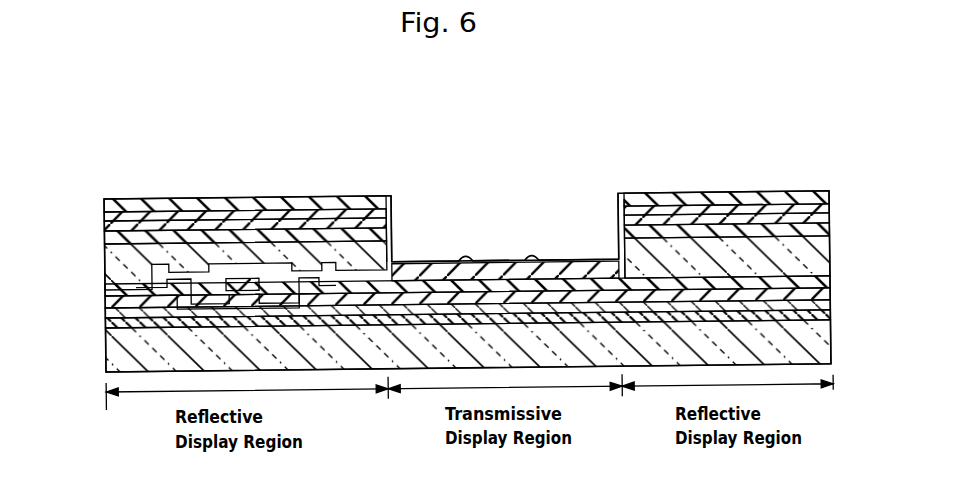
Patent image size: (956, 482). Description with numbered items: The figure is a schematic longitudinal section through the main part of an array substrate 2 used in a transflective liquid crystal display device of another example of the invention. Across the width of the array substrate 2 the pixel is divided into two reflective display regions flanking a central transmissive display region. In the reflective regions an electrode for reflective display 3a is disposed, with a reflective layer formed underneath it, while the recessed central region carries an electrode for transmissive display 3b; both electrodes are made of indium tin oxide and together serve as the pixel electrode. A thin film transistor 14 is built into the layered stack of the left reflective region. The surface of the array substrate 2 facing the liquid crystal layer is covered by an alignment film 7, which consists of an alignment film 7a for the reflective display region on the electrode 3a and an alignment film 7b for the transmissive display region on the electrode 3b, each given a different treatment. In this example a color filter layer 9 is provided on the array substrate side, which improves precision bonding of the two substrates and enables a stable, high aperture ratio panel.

The array substrate 2 is at (735, 120).
The color filter layer 9 is at (106, 222).
The electrode for reflective display 3a is at (106, 229).
The electrode for transmissive display 3b is at (556, 265).
The alignment film 7 is at (505, 213).
The alignment film for the reflective display region 7a is at (388, 192).
The alignment film for the transmissive display region 7b is at (487, 264).
The thin film transistor 14 is at (106, 280).